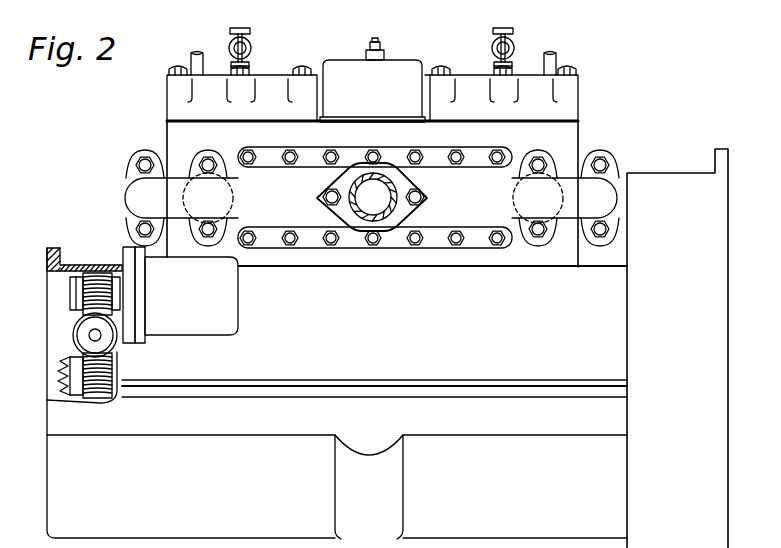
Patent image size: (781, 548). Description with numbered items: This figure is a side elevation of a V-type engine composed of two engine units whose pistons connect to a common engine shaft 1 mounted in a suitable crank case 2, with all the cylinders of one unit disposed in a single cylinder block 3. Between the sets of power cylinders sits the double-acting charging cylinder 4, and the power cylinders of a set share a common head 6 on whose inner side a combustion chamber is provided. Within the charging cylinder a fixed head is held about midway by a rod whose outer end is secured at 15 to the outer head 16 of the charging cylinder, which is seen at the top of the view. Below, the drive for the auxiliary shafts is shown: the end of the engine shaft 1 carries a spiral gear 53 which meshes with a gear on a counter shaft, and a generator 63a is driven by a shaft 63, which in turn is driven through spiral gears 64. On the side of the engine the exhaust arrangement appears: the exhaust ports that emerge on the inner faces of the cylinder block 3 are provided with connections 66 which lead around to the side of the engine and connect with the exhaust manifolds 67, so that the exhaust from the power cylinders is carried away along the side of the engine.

The engine shaft 1 is at (62, 352).
The crank case 2 is at (387, 348).
The cylinder block 3 is at (565, 143).
The charging cylinder 4 is at (426, 75).
The head 6 is at (168, 101).
The securing point of the rod 15 is at (388, 52).
The outer head of the charging cylinder 16 is at (340, 62).
The spiral gear 53 is at (100, 392).
The shaft 63 is at (78, 293).
The generator 63a is at (180, 295).
The spiral gears 64 is at (110, 340).
The connections 66 is at (129, 179).
The exhaust manifolds 67 is at (372, 197).